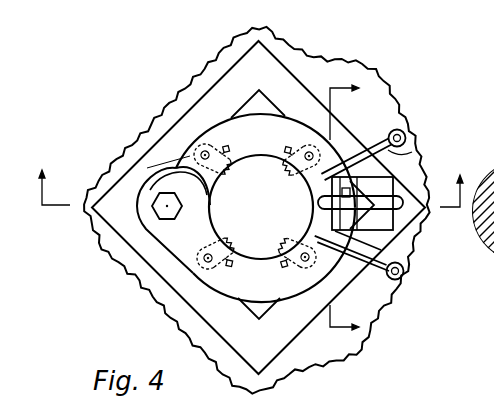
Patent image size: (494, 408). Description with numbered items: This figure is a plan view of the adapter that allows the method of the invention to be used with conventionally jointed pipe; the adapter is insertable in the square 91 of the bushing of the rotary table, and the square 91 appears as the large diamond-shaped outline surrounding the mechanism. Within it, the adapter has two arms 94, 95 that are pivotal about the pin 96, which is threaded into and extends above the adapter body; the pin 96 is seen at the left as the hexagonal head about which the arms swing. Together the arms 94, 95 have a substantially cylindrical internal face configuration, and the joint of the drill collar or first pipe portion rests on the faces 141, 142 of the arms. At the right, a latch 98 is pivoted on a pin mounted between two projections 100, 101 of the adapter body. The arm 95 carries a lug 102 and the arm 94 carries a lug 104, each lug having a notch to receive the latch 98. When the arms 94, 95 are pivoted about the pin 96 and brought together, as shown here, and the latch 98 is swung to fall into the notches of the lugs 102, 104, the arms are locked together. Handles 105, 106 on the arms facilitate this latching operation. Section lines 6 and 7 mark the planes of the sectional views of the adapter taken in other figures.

The square 91 is at (283, 65).
The arm 94 is at (227, 127).
The arm 95 is at (225, 278).
The pin 96 is at (167, 208).
The latch 98 is at (419, 197).
The projection 100 is at (378, 192).
The projection 101 is at (380, 220).
The lug 102 is at (376, 246).
The lug 104 is at (339, 175).
The handle 105 is at (346, 258).
The handle 106 is at (413, 152).
The face 141 is at (278, 147).
The face 142 is at (292, 240).
The section line 6- 6 is at (250, 179).
The section line 7- 7 is at (353, 210).